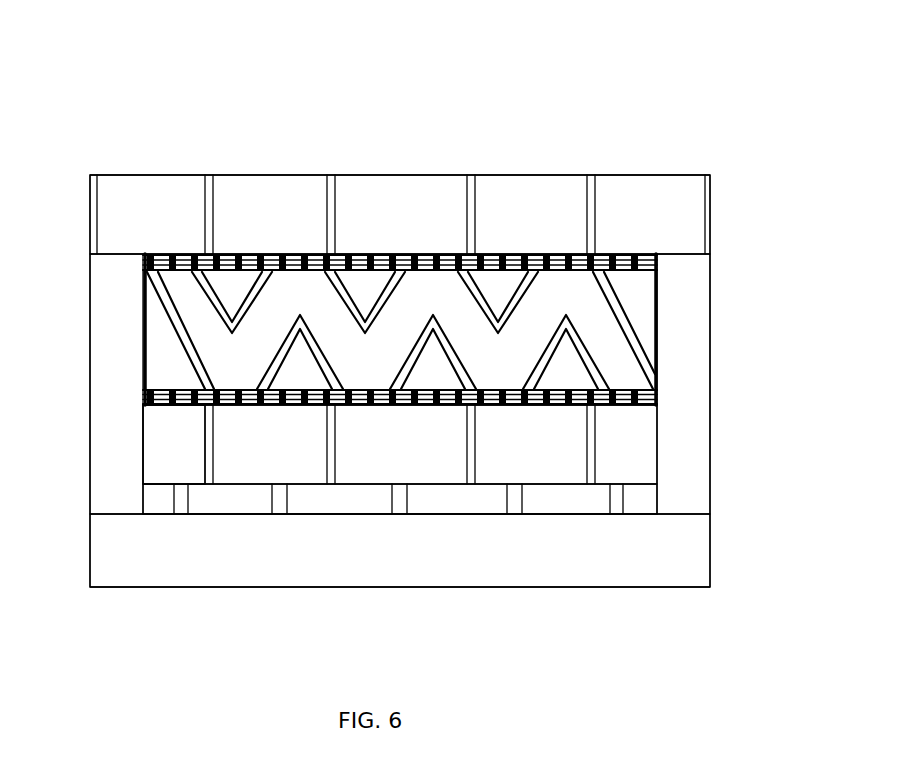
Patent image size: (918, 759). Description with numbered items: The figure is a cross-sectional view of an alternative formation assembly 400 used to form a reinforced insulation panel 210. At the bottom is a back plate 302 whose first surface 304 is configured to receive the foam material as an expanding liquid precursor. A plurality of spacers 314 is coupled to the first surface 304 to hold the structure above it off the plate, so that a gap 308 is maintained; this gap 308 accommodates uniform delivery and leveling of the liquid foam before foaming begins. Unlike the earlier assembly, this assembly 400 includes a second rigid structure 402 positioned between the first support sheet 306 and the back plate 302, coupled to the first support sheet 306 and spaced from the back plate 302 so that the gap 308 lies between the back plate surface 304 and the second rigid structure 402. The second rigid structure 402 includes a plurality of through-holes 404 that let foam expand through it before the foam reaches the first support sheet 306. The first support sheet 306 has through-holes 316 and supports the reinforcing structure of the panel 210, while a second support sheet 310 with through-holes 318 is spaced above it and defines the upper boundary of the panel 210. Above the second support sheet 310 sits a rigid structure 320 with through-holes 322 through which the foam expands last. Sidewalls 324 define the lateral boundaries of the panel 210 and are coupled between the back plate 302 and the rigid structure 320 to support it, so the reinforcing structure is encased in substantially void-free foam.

The formation assembly 400 is at (83, 108).
The through-holes 322 is at (378, 200).
The rigid structure 320 is at (687, 207).
The sidewalls 324 is at (100, 310).
The back plate 302 is at (687, 545).
The second support sheet 310 is at (650, 267).
The through-holes 318 is at (248, 255).
The first support sheet 306 is at (657, 403).
The through-holes 316 is at (223, 405).
The reinforced insulation panel 210 is at (653, 320).
The through-holes 404 is at (357, 455).
The second rigid structure 402 is at (153, 432).
The spacers 314 is at (625, 507).
The gap 308 is at (537, 505).
The first surface 304 is at (592, 515).